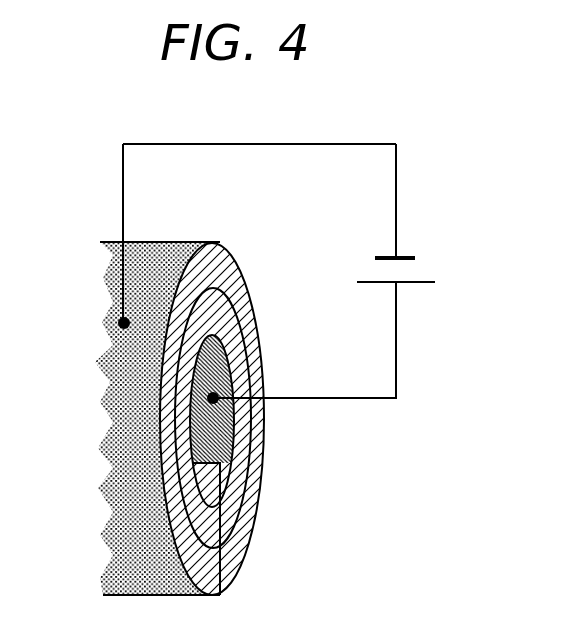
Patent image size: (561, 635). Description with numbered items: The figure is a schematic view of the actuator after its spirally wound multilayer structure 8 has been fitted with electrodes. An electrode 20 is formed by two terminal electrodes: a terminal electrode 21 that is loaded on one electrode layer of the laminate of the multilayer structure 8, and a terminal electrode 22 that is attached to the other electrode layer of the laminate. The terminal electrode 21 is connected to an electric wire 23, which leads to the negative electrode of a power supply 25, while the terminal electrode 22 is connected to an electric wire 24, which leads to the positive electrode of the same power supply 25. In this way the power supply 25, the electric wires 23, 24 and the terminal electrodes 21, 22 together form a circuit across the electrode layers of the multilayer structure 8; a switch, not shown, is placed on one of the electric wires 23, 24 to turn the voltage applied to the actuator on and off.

The multilayer structure 8 is at (112, 403).
The electrode 20 is at (270, 276).
The terminal electrode 21 is at (118, 323).
The terminal electrode 22 is at (217, 424).
The electric wire 23 is at (285, 143).
The electric wire 24 is at (397, 341).
The power supply 25 is at (420, 270).